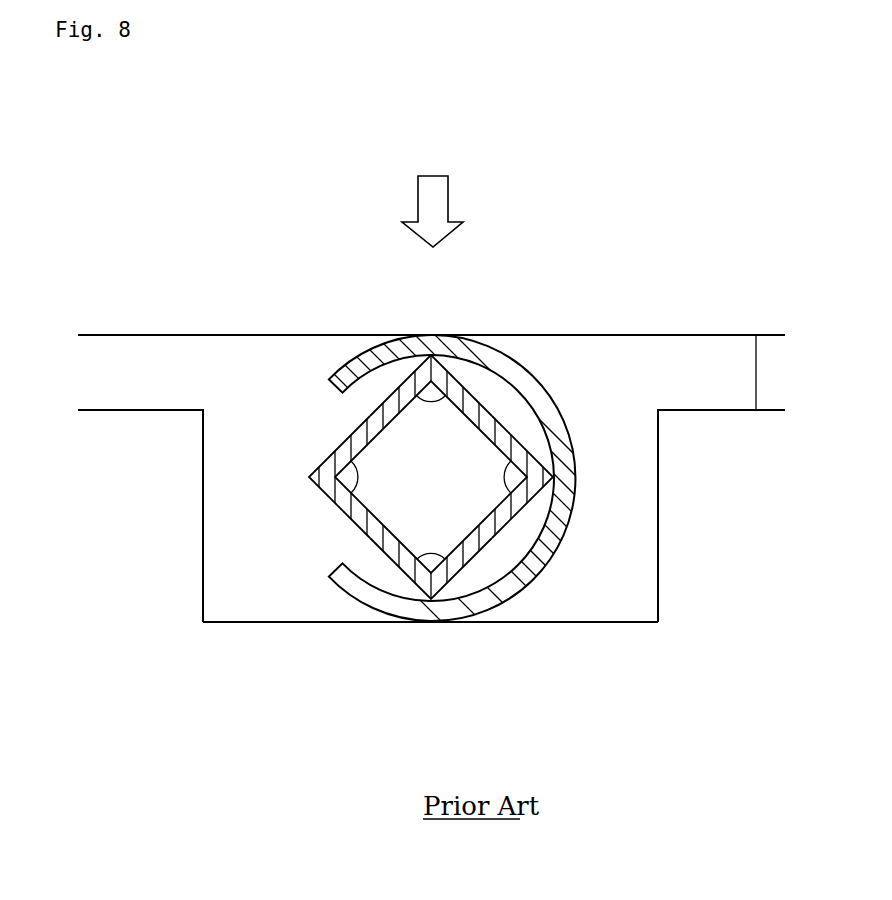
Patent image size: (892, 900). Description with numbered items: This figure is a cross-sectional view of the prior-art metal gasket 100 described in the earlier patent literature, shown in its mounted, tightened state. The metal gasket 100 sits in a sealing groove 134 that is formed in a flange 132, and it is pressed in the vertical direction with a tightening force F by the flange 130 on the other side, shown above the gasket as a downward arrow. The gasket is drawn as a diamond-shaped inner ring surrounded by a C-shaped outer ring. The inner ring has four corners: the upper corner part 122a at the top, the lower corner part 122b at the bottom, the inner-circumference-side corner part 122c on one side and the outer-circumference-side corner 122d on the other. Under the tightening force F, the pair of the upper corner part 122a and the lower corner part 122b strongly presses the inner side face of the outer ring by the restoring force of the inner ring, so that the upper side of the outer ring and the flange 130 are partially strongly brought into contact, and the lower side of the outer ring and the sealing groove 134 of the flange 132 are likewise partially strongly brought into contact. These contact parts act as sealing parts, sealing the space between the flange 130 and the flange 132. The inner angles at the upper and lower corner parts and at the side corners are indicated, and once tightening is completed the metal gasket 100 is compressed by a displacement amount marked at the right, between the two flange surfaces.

The metal gasket 100 is at (308, 498).
The upper corner part 122a is at (437, 349).
The lower corner part 122b is at (430, 600).
The inner-circumference-side corner part 122c is at (553, 483).
The outer-circumference-side corner 122d is at (310, 477).
The flange 130 is at (243, 334).
The flange 132 is at (157, 409).
The sealing groove 134 is at (320, 621).
The tightening force F is at (452, 178).